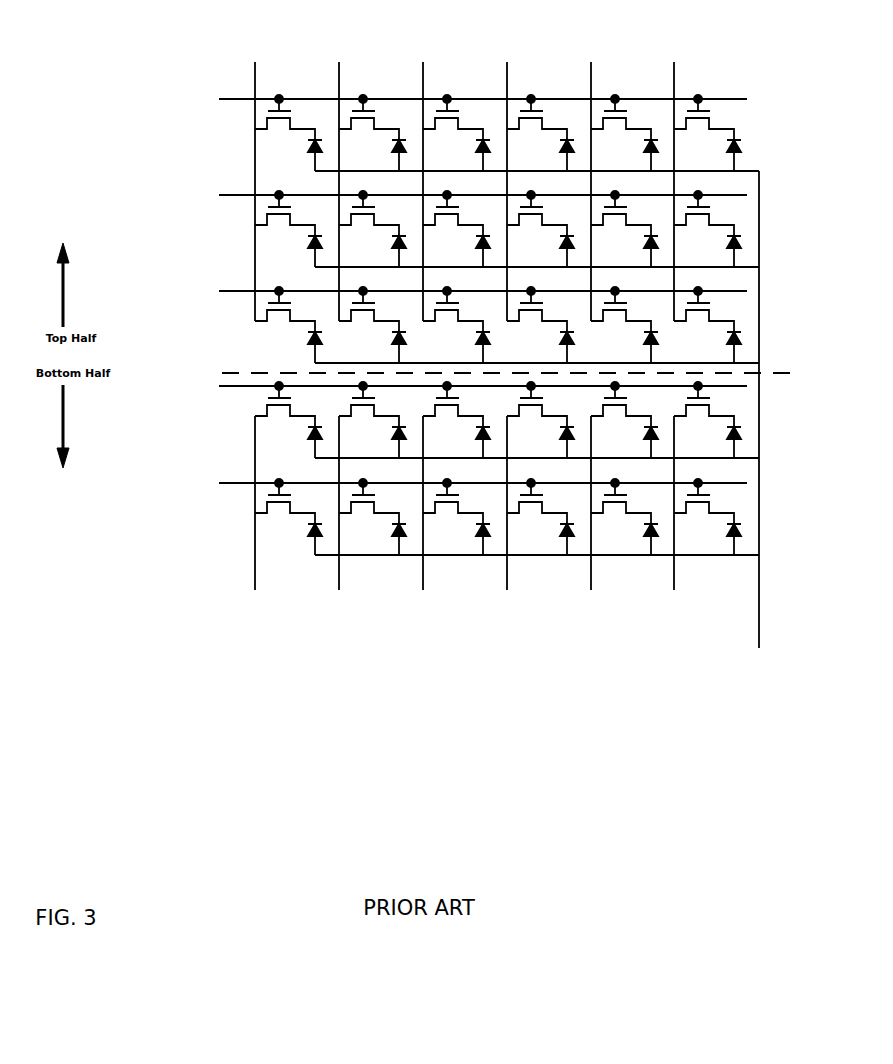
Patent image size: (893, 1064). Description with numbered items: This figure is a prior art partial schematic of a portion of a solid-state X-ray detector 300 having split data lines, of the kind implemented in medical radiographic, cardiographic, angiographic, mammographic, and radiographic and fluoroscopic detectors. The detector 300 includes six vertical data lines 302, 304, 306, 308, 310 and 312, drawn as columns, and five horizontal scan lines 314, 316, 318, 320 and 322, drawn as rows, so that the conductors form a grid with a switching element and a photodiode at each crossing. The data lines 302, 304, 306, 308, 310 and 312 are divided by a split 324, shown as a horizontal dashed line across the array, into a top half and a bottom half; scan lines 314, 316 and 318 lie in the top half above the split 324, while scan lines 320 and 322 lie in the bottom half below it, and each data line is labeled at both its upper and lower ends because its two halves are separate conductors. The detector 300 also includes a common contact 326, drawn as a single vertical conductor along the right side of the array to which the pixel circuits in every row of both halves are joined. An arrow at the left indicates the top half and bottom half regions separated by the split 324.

The solid-state X-ray detector 300 is at (677, 864).
The data line 302 is at (200, 629).
The data line 304 is at (284, 629).
The data line 306 is at (368, 629).
The data line 308 is at (452, 629).
The data line 310 is at (536, 629).
The data line 312 is at (619, 629).
The scan line 314 is at (234, 99).
The scan line 316 is at (228, 195).
The scan line 318 is at (228, 291).
The scan line 320 is at (228, 386).
The scan line 322 is at (228, 483).
The split 324 is at (228, 373).
The common contact 326 is at (758, 630).